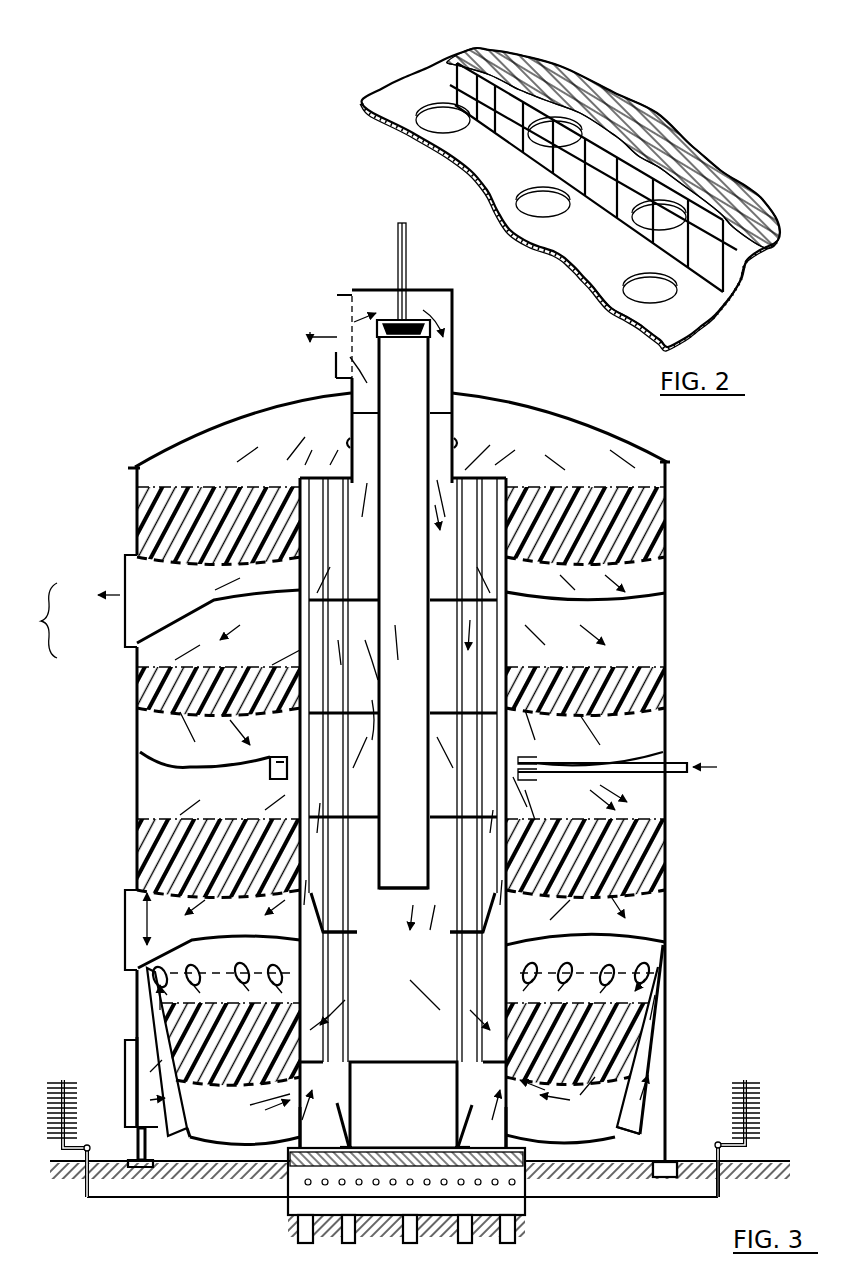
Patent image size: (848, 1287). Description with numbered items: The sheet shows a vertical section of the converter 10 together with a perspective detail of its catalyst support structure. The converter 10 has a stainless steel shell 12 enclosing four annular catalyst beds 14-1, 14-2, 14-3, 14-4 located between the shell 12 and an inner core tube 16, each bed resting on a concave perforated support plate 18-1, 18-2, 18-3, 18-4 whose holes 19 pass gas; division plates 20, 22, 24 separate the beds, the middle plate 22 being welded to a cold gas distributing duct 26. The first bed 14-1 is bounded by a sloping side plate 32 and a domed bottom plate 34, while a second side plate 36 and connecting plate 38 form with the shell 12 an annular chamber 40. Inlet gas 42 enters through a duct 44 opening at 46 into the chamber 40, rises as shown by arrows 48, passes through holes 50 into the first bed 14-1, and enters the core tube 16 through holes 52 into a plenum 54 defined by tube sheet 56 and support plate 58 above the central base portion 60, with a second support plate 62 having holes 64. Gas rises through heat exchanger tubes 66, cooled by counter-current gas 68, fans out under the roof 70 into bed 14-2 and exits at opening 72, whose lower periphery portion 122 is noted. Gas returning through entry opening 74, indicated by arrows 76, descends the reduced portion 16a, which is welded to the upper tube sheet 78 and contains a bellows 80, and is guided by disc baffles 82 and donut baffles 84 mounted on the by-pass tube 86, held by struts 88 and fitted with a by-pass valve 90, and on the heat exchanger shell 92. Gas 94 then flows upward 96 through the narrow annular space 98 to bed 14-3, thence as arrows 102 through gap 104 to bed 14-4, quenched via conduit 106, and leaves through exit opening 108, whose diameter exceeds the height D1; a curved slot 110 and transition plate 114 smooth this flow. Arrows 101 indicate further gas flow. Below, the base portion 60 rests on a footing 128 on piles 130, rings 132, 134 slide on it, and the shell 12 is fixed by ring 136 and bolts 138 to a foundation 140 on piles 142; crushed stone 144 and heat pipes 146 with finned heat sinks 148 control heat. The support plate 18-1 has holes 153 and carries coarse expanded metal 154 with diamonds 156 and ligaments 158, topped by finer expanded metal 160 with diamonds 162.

In FIG. 3, the converter 10 is at (230, 337).
In FIG. 3, the shell 12 is at (135, 775).
In FIG. 3, the first catalyst bed 14-1 is at (265, 1085).
In FIG. 3, the second catalyst bed 14-2 is at (137, 518).
In FIG. 3, the third catalyst bed 14-3 is at (137, 685).
In FIG. 3, the fourth catalyst bed 14-4 is at (137, 845).
In FIG. 3, the inner core tube 16 is at (314, 965).
In FIG. 3, the reduced diameter upper portion of core tube 16a is at (453, 440).
In FIG. 2, the first bed support plate 18-1 is at (697, 323).
In FIG. 3, the first bed support plate 18-1 is at (577, 1060).
In FIG. 3, the second bed support plate 18-2 is at (585, 539).
In FIG. 3, the third bed support plate 18-3 is at (585, 737).
In FIG. 3, the fourth bed support plate 18-4 is at (585, 872).
In FIG. 3, the holes 19 is at (585, 836).
In FIG. 3, the upper division plate 20 is at (235, 595).
In FIG. 3, the middle division plate 22 is at (175, 760).
In FIG. 3, the division plate 24 is at (235, 936).
In FIG. 3, the cold gas distributing duct 26 is at (268, 770).
In FIG. 3, the side plate 32 is at (230, 1127).
In FIG. 3, the bottom plate 34 is at (255, 1115).
In FIG. 3, the second side plate 36 is at (650, 1118).
In FIG. 3, the connecting plate 38 is at (634, 1136).
In FIG. 3, the annular chamber 40 is at (655, 1043).
In FIG. 3, the gas 42 is at (125, 1060).
In FIG. 3, the duct 44 is at (137, 1038).
In FIG. 3, the opening 46 is at (187, 1133).
In FIG. 3, the arrows 48 is at (148, 1010).
In FIG. 3, the holes 50 is at (275, 975).
In FIG. 3, the holes 52 is at (560, 1111).
In FIG. 3, the plenum 54 is at (397, 1105).
In FIG. 3, the tube sheet 56 is at (396, 1045).
In FIG. 3, the vertical annular support plate 58 is at (358, 1084).
In FIG. 3, the central base portion 60 is at (440, 1147).
In FIG. 3, the second annular support plate 62 is at (338, 1121).
In FIG. 3, the holes 64 is at (475, 1115).
In FIG. 3, the heat exchanger tubes 66 is at (325, 915).
In FIG. 3, the arrows 68 is at (378, 668).
In FIG. 3, the converter roof 70 is at (248, 410).
In FIG. 3, the exit opening 72 is at (126, 600).
In FIG. 3, the entry opening 74 is at (337, 308).
In FIG. 3, the arrows 76 is at (318, 342).
In FIG. 3, the upper tube sheet 78 is at (487, 474).
In FIG. 3, the bellows 80 is at (430, 445).
In FIG. 3, the disc baffles 82 is at (360, 595).
In FIG. 3, the donut baffles 84 is at (350, 713).
In FIG. 3, the by-pass tube 86 is at (380, 860).
In FIG. 3, the struts 88 is at (453, 400).
In FIG. 3, the by-pass valve 90 is at (406, 312).
In FIG. 3, the heat exchanger shell 92 is at (497, 940).
In FIG. 3, the arrows 94 is at (380, 925).
In FIG. 3, the arrows 96 is at (335, 1005).
In FIG. 3, the narrow annular space 98 is at (277, 913).
In FIG. 3, the flow arrow 101 is at (297, 650).
In FIG. 3, the arrows 102 is at (200, 740).
In FIG. 3, the narrow gap 104 is at (285, 780).
In FIG. 3, the conduit 106 is at (680, 777).
In FIG. 3, the exit opening 108 is at (126, 945).
In FIG. 3, the curved slot 110 is at (222, 905).
In FIG. 3, the transition plate 114 is at (260, 960).
In FIG. 3, the portion of periphery of opening 122 is at (74, 620).
In FIG. 3, the concrete footing 128 is at (525, 1210).
In FIG. 3, the piles 130 is at (517, 1235).
In FIG. 3, the ring 132 is at (304, 1147).
In FIG. 3, the ring 134 is at (355, 1147).
In FIG. 3, the ring 136 is at (667, 1160).
In FIG. 3, the bolts 138 is at (675, 1195).
In FIG. 3, the concrete foundation 140 is at (660, 1175).
In FIG. 3, the piles 142 is at (667, 1180).
In FIG. 3, the crushed stone 144 is at (268, 1200).
In FIG. 3, the heat pipes 146 is at (177, 1200).
In FIG. 3, the finned heat sinks 148 is at (762, 1100).
In FIG. 2, the holes 153 is at (643, 293).
In FIG. 2, the expanded metal 154 is at (447, 63).
In FIG. 2, the diamonds 156 is at (713, 260).
In FIG. 2, the ligaments 158 is at (707, 280).
In FIG. 2, the expanded metal 160 is at (597, 74).
In FIG. 2, the diamonds 162 is at (750, 213).
In FIG. 3, the height D1 is at (143, 905).